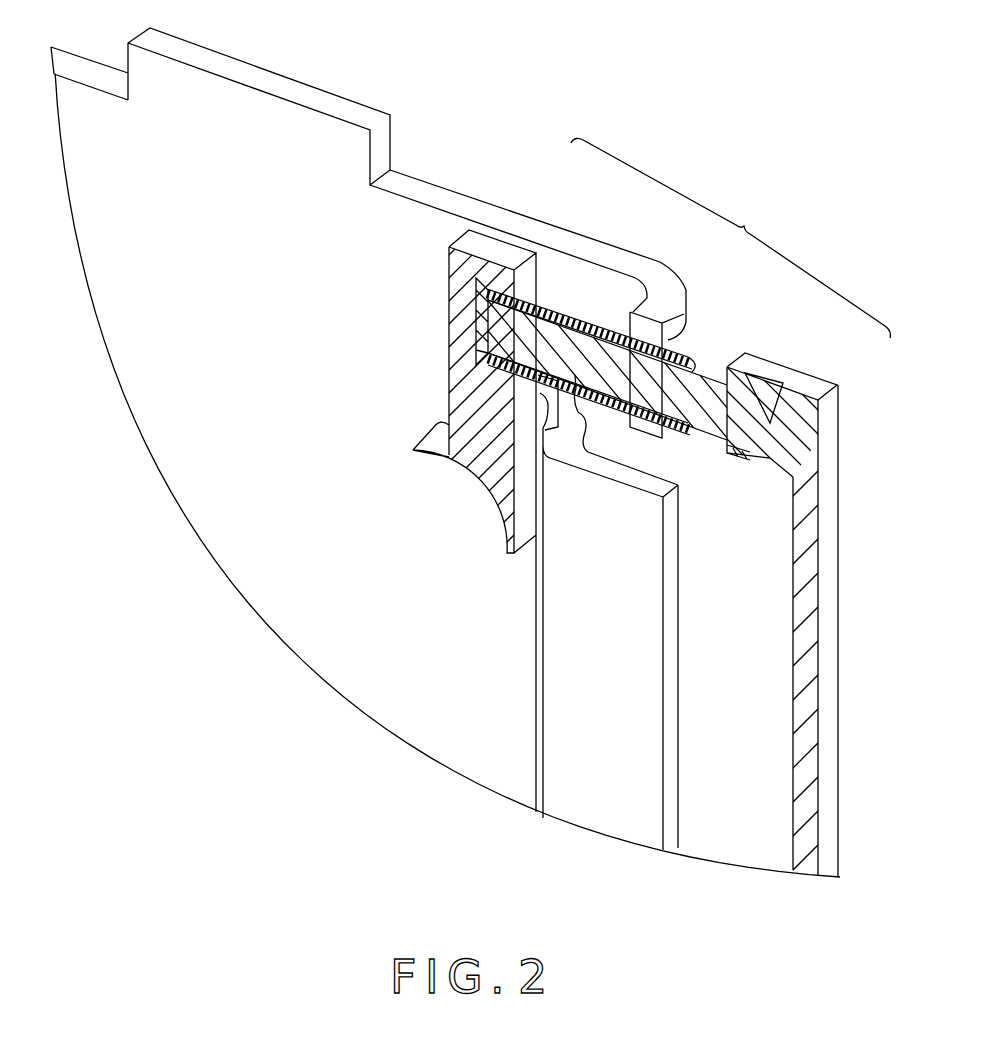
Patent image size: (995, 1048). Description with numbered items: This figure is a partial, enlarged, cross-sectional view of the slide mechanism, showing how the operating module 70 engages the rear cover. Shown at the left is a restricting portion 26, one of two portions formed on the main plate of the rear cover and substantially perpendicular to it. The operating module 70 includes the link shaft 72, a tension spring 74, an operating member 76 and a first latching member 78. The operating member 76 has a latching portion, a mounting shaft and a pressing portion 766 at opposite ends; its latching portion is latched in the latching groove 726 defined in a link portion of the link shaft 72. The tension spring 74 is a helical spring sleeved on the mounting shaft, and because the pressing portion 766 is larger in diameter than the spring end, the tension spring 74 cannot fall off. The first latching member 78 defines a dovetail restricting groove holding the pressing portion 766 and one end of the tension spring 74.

The restricting portion 26 is at (650, 330).
The operating module 70 is at (714, 494).
The link shaft 72 is at (797, 420).
The tension spring 74 is at (563, 337).
The operating member 76 is at (717, 380).
The pressing portion 766 is at (478, 290).
The first latching member 78 is at (460, 263).
The latching groove 726 is at (740, 453).